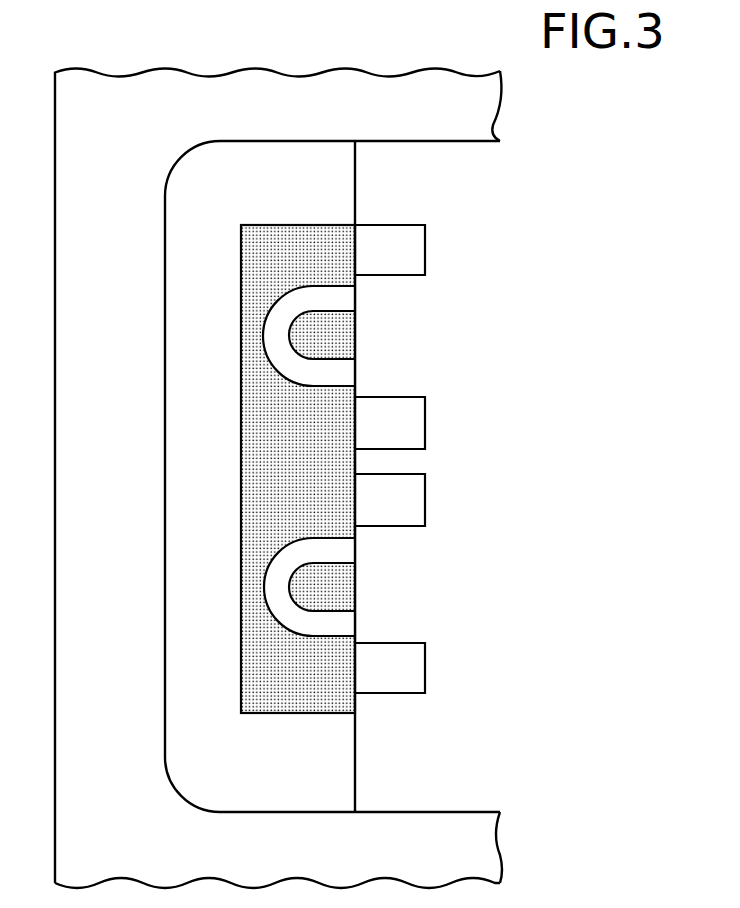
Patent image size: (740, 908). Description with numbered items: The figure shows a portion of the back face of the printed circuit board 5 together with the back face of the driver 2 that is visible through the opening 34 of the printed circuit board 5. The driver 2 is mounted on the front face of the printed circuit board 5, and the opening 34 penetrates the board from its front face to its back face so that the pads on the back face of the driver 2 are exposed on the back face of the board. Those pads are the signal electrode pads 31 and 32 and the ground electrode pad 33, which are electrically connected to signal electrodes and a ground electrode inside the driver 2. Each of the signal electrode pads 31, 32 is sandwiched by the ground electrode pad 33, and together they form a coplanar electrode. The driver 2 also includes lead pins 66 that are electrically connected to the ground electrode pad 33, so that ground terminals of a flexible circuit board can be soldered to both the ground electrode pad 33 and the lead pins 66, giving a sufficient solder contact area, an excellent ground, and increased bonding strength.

The printed circuit board 5 is at (78, 69).
The driver 2 is at (356, 157).
The opening 34 is at (463, 142).
The ground electrode pad 33 is at (345, 704).
The signal electrode pad 31 is at (348, 334).
The signal electrode pad 32 is at (348, 587).
The lead pin 66 is at (425, 246).